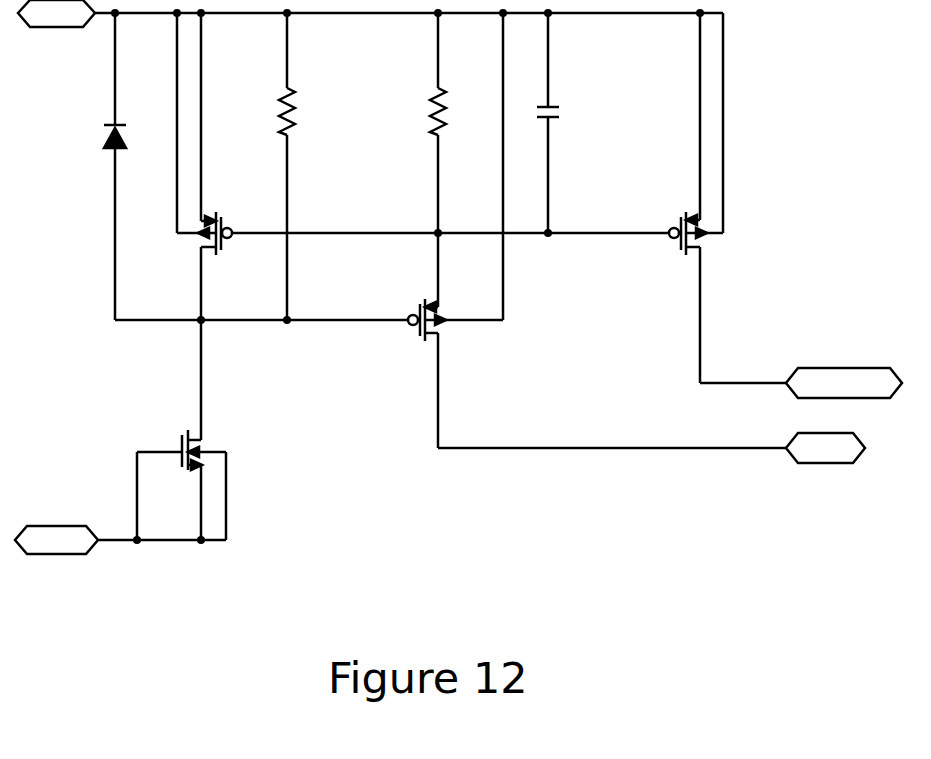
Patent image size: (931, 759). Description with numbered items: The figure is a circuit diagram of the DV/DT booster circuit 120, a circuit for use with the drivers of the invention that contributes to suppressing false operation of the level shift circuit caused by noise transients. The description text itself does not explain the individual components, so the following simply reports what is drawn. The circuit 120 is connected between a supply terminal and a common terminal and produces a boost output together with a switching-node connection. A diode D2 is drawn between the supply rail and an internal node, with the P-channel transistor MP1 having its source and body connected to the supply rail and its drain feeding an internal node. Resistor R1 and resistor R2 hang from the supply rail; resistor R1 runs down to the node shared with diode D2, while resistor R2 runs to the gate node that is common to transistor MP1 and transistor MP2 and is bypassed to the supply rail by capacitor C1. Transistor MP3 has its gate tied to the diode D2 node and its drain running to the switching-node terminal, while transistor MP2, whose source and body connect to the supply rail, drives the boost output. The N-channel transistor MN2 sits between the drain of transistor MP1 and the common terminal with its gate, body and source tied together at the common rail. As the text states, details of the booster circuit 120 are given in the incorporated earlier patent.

The DV/DT booster circuit 120 is at (458, 309).
The diode D2 is at (94, 166).
The PMOS transistor MP1 is at (186, 138).
The PMOS transistor MP2 is at (710, 139).
The PMOS transistor MP3 is at (455, 182).
The NMOS transistor MN2 is at (201, 472).
The resistor R1 300K R1 is at (320, 166).
The resistor R2 10K R2 is at (460, 160).
The capacitor C1 1.5P C1 is at (578, 123).